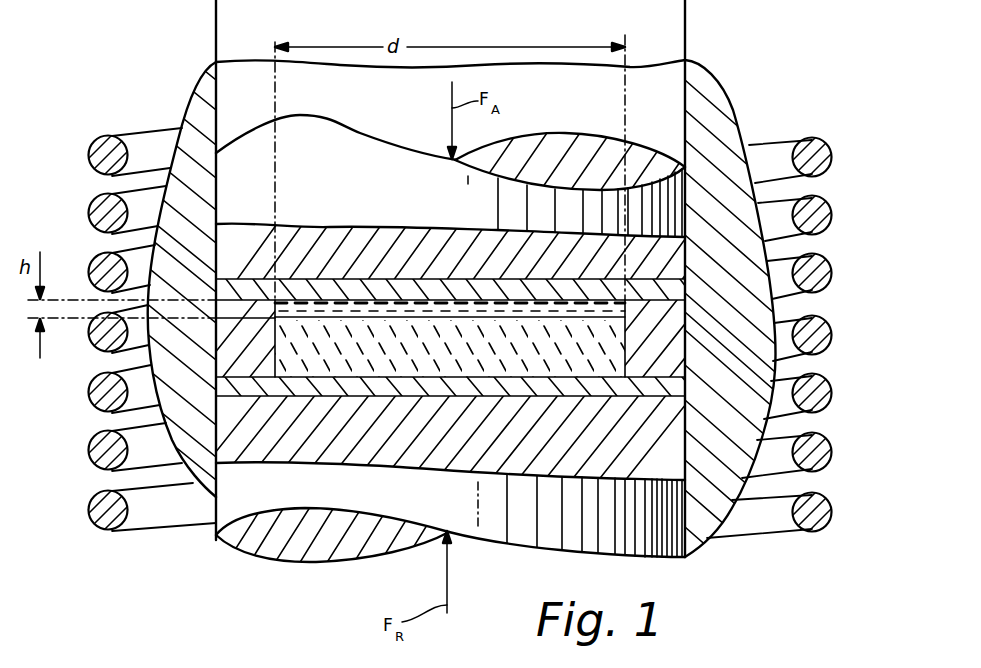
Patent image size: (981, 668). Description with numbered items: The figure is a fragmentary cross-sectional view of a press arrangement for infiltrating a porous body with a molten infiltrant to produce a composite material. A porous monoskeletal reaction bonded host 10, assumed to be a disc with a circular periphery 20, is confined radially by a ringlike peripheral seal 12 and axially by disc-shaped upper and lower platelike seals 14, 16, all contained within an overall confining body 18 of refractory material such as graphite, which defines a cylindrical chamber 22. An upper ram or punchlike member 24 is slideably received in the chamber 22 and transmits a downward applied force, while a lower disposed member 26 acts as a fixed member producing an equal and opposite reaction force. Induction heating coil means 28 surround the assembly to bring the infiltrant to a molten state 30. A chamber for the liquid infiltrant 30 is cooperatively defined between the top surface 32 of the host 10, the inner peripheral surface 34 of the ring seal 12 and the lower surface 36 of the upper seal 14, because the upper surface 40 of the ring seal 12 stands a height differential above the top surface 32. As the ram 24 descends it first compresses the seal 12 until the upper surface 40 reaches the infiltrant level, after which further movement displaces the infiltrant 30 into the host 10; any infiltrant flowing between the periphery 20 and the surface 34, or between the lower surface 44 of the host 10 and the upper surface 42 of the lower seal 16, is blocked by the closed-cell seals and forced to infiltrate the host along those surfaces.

The porous monoskeletal reaction bonded host 10 is at (420, 360).
The peripheral seal 12 is at (235, 360).
The upper sheet or platelike seal 14 is at (317, 290).
The lower sheet or platelike seal 16 is at (533, 390).
The confining body 18 is at (727, 100).
The circular periphery of host 20 is at (215, 329).
The chamber 22 is at (217, 82).
The upper ram or punchlike member 24 is at (330, 125).
The lower disposed member 26 is at (315, 503).
The induction heating coil means 28 is at (105, 262).
The molten infiltrant 30 is at (455, 309).
The top surface of host 32 is at (382, 314).
The inner peripheral surface of ring seal 34 is at (625, 350).
The lower surface of upper seal 36 is at (566, 309).
The upper surface of ring sealing means 40 is at (662, 297).
The upper surface of lower seal 42 is at (593, 382).
The lower surface of host 44 is at (466, 381).